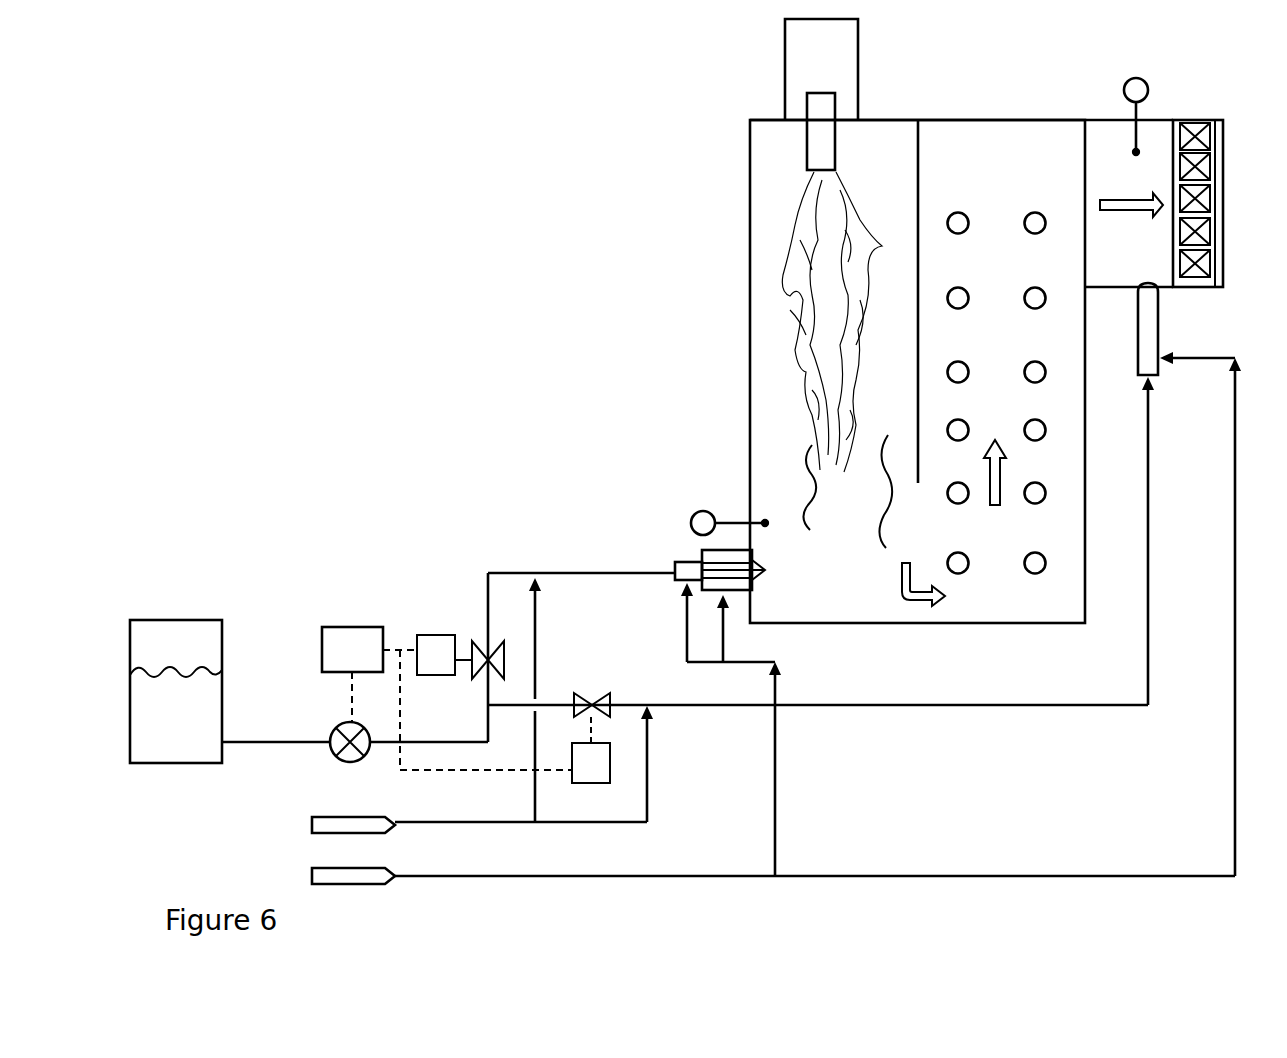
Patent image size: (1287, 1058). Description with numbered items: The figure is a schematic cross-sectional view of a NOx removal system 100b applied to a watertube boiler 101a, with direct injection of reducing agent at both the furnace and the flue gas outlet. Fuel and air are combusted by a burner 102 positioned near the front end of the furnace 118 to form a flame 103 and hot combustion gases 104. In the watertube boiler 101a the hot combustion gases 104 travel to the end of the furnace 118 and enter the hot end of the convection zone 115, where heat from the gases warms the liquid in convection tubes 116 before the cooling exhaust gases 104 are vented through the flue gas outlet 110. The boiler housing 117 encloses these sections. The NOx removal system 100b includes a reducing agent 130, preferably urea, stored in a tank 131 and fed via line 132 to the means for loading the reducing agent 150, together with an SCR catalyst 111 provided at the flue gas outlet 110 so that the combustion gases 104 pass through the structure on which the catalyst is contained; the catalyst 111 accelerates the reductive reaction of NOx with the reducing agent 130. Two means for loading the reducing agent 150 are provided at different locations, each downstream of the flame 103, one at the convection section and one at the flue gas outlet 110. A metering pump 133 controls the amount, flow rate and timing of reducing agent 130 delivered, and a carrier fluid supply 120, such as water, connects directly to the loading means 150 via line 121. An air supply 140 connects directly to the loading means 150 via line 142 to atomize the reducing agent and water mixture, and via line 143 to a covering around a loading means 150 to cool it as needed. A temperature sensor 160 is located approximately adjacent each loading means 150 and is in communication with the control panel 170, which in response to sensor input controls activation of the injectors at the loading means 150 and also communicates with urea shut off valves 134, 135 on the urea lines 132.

The NOx removal system 100b is at (474, 322).
The watertube boiler 101a is at (1047, 112).
The burner 102 is at (872, 83).
The flame 103 is at (838, 298).
The hot combustion gases 104 is at (825, 571).
The flue gas outlet 110 is at (1094, 256).
The SCR catalyst 111 is at (1167, 105).
The convection zone 115 is at (979, 595).
The heat exchanger tubes 116 is at (982, 345).
The housing 117 is at (744, 154).
The furnace 118 is at (887, 145).
The carrier fluid supply 120 is at (239, 839).
The line 121 is at (524, 700).
The reducing agent 130 is at (153, 732).
The tank 131 is at (157, 615).
The line 132 is at (255, 717).
The metering pump 133 is at (327, 792).
The urea shut off valve 134 is at (562, 682).
The urea shut off valve 135 is at (418, 618).
The air supply 140 is at (239, 892).
The line 142 is at (680, 624).
The line 143 is at (730, 614).
The means for loading the reducing agent 150 is at (1168, 322).
The temperature sensor 160 is at (1121, 71).
The control panel 170 is at (328, 616).